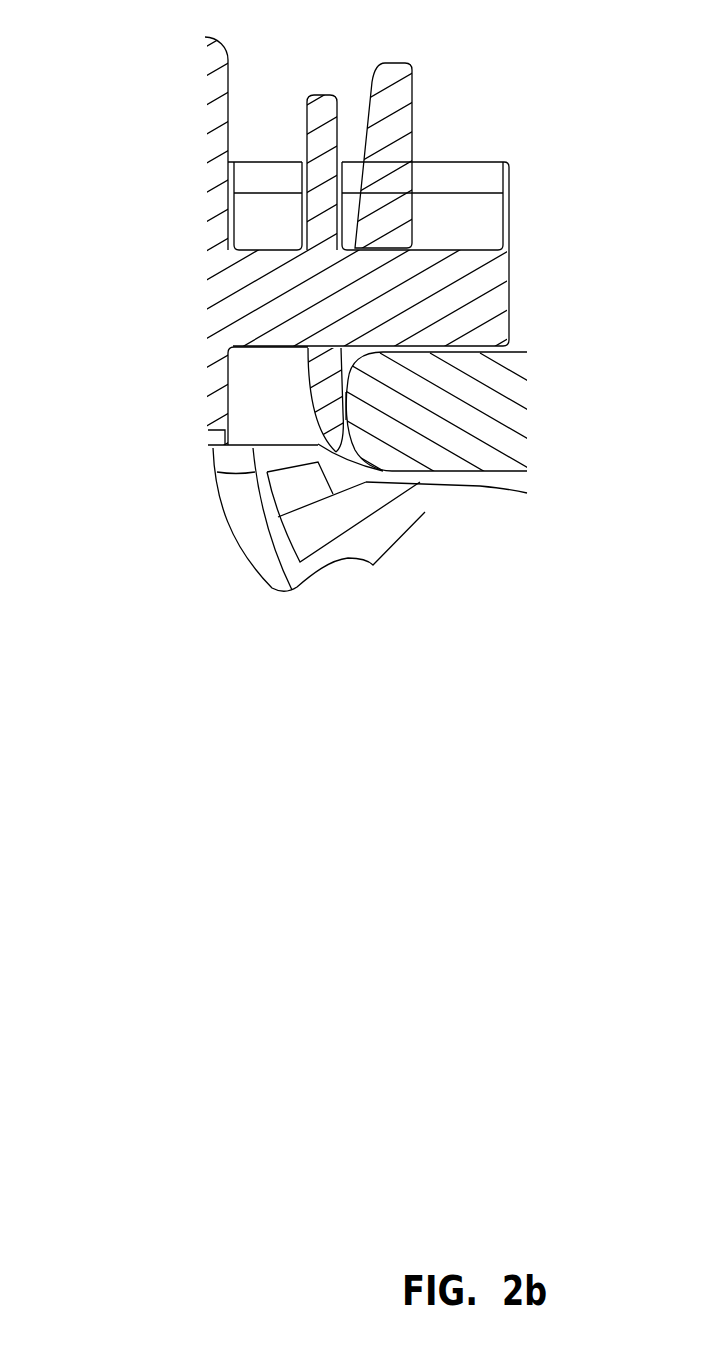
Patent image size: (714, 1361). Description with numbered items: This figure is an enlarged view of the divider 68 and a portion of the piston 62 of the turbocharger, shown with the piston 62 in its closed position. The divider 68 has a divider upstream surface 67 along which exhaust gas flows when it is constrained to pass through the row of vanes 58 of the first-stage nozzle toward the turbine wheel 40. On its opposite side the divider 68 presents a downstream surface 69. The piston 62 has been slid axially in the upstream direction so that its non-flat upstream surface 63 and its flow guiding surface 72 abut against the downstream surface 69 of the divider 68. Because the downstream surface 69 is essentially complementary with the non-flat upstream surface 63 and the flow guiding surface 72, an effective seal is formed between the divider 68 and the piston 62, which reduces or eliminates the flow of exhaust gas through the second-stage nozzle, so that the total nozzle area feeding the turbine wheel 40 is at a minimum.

The vanes 58 is at (273, 264).
The downstream surface 69 is at (345, 373).
The divider 68 is at (323, 349).
The divider upstream surface 67 is at (301, 385).
The non-flat upstream surface 63 is at (345, 405).
The piston 62 is at (443, 463).
The flow guiding surface 72 is at (360, 463).
The turbine wheel 40 is at (263, 570).